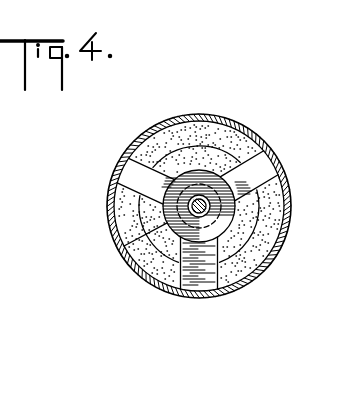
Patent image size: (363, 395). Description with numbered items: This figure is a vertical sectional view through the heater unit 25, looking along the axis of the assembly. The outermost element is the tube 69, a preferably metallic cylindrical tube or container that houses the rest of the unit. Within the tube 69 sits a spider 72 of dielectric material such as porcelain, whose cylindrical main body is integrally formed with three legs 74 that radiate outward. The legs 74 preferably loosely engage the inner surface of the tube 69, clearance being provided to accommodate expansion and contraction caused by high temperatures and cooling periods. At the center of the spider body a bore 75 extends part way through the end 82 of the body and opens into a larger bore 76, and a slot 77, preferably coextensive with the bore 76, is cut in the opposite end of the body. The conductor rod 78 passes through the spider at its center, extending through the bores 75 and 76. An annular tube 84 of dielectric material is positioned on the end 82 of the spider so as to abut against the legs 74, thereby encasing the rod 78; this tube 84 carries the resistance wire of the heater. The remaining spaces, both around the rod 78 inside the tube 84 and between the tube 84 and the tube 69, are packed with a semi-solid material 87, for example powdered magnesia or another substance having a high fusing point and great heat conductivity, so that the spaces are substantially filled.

The heater unit 25 is at (117, 285).
The tube 69 is at (141, 133).
The spider 72 is at (147, 215).
The legs 74 is at (130, 177).
The bore 75 is at (124, 246).
The larger bore 76 is at (257, 204).
The slot 77 is at (200, 172).
The conductor rod 78 is at (205, 210).
The end of body 82 is at (168, 150).
The annular tube 84 is at (226, 150).
The semi-solid material 87 is at (253, 258).